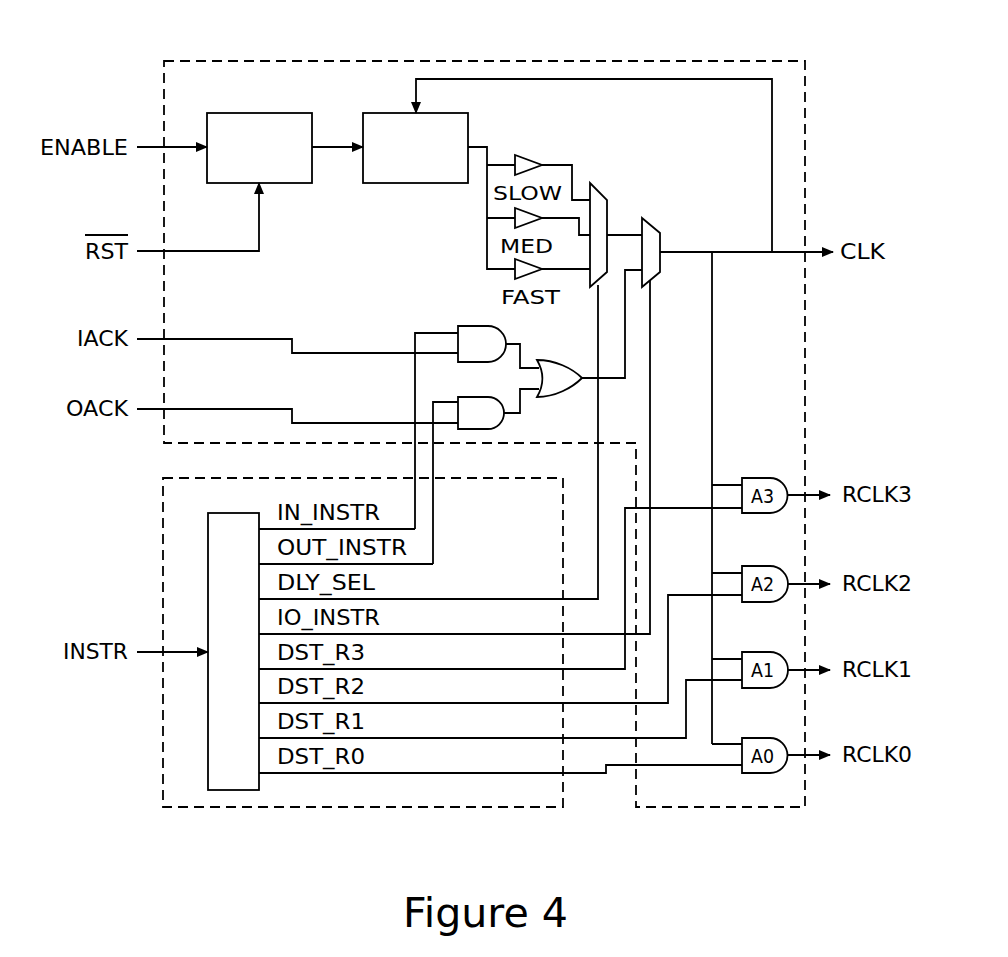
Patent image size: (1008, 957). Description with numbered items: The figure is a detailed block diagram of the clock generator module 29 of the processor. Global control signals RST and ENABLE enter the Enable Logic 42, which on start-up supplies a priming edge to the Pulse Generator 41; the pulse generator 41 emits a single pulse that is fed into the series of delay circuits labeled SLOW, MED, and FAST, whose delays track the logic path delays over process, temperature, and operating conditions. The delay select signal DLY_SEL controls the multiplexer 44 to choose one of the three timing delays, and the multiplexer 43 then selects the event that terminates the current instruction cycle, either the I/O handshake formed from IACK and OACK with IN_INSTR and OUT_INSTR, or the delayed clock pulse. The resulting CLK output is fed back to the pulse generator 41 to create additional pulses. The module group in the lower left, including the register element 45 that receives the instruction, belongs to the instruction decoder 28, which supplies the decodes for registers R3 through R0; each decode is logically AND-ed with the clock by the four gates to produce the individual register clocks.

The instruction decoder 28 is at (383, 807).
The clock generator module 29 is at (730, 61).
The pulse generator 41 is at (398, 113).
The enable logic 42 is at (242, 113).
The multiplexer 43 is at (661, 233).
The multiplexer 44 is at (598, 192).
The instruction register 45 is at (233, 790).